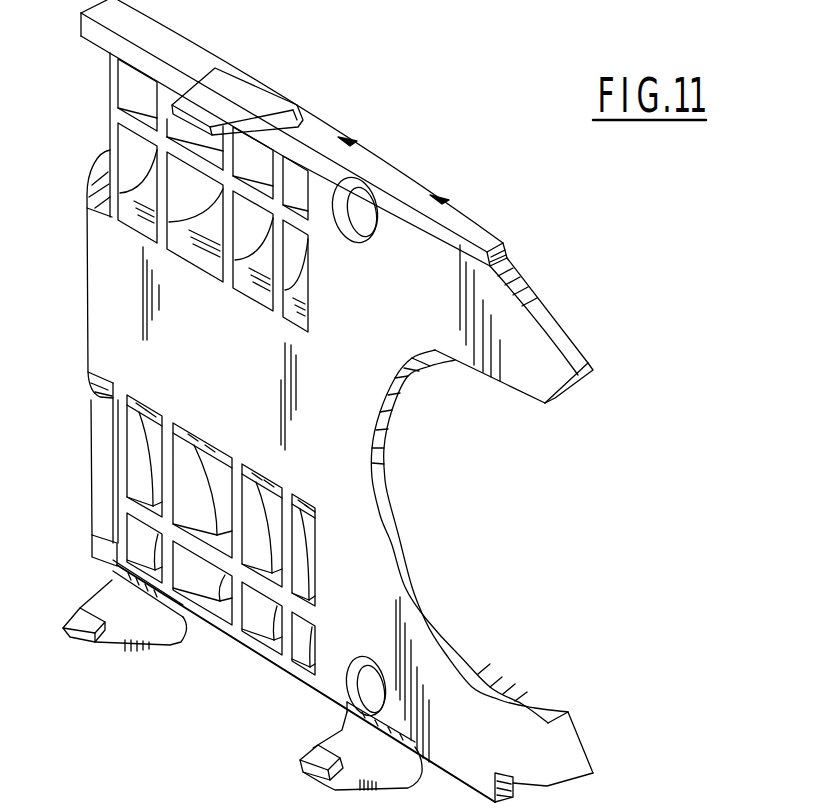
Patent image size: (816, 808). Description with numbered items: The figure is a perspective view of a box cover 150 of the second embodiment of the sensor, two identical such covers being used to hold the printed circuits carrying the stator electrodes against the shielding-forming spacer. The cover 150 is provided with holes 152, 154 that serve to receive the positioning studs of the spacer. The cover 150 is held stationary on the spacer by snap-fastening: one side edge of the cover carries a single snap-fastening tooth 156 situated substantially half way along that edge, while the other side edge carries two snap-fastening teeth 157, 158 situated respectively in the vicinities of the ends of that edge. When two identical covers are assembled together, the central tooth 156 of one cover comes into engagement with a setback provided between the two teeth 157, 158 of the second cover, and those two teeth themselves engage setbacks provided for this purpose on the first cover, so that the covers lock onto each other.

The box cover 150 is at (396, 147).
The hole 152 is at (365, 208).
The hole 154 is at (362, 682).
The snap-fastening tooth 156 is at (228, 95).
The snap-fastening tooth 157 is at (120, 652).
The snap-fastening tooth 158 is at (300, 778).